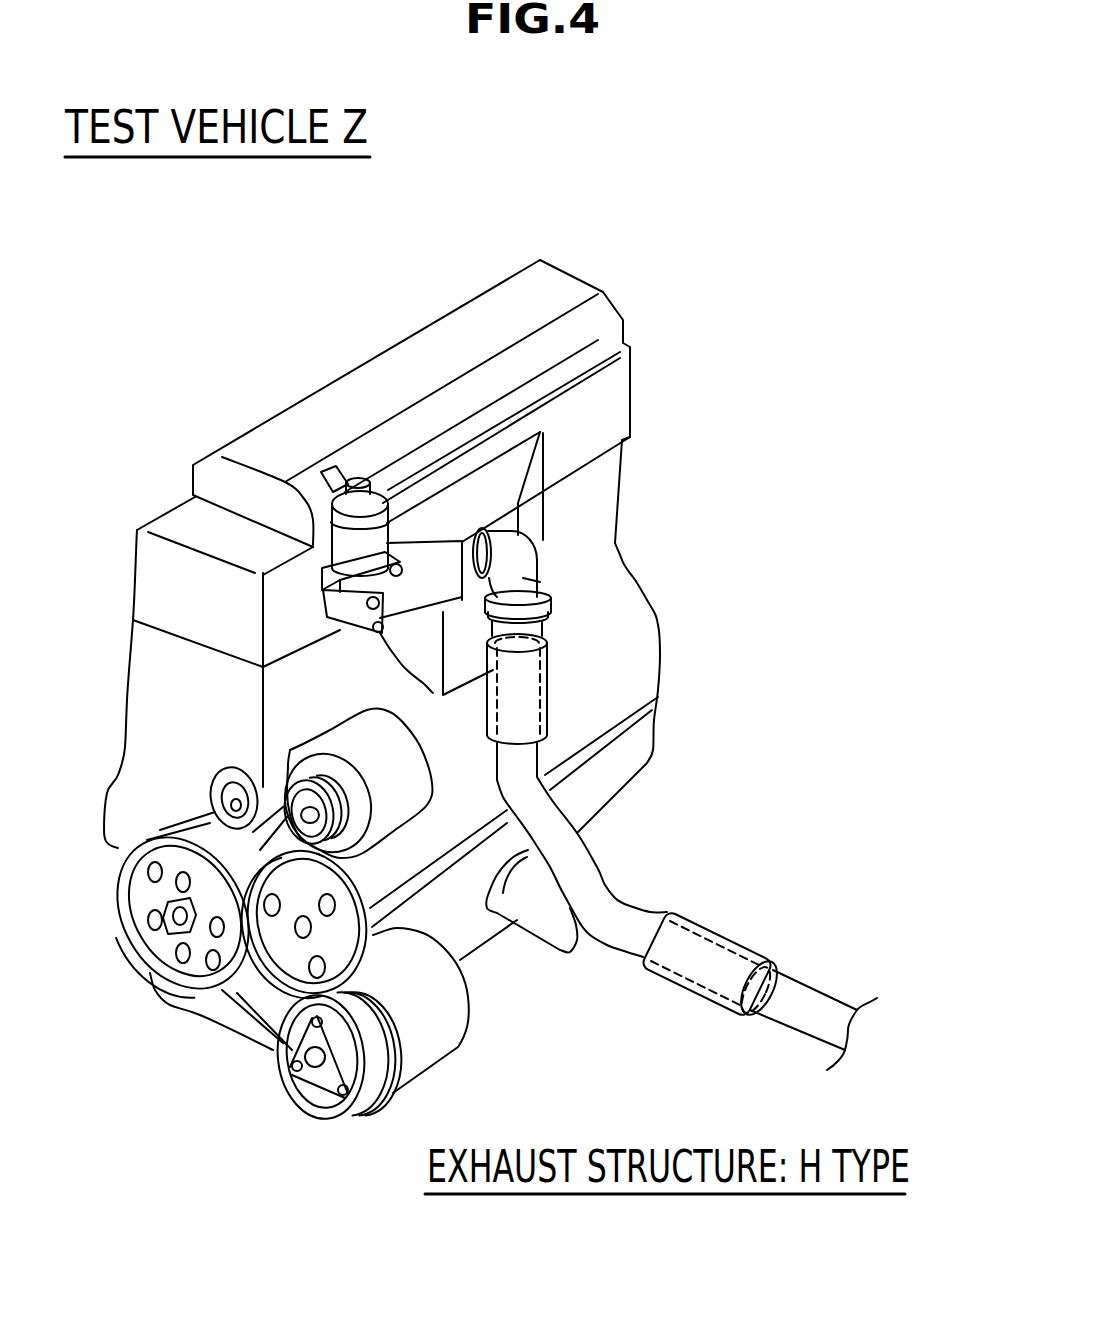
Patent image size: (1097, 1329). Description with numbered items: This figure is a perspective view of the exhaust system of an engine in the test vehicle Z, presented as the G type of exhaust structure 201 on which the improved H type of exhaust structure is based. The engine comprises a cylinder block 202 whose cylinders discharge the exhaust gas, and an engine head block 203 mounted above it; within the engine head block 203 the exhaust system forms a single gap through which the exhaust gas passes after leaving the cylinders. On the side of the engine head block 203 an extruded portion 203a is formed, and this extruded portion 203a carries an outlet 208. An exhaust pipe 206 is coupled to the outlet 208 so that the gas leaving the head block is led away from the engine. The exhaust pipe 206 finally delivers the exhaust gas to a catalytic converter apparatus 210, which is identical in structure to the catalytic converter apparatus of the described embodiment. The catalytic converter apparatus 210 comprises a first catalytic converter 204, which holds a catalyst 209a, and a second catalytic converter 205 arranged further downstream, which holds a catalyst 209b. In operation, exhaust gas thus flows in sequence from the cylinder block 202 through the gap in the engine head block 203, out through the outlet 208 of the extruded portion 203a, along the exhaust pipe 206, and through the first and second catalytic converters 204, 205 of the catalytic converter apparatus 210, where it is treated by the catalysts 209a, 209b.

The exhaust structure 201 is at (597, 250).
The cylinder block 202 is at (600, 500).
The engine head block 203 is at (620, 383).
The extruded portion 203a is at (496, 486).
The first catalytic converter 204 is at (547, 660).
The second catalytic converter 205 is at (690, 913).
The exhaust pipe 206 is at (540, 580).
The outlet 208 is at (470, 540).
The catalyst 209a is at (520, 700).
The catalyst 209b is at (727, 972).
The catalytic converter apparatus 210 is at (836, 617).